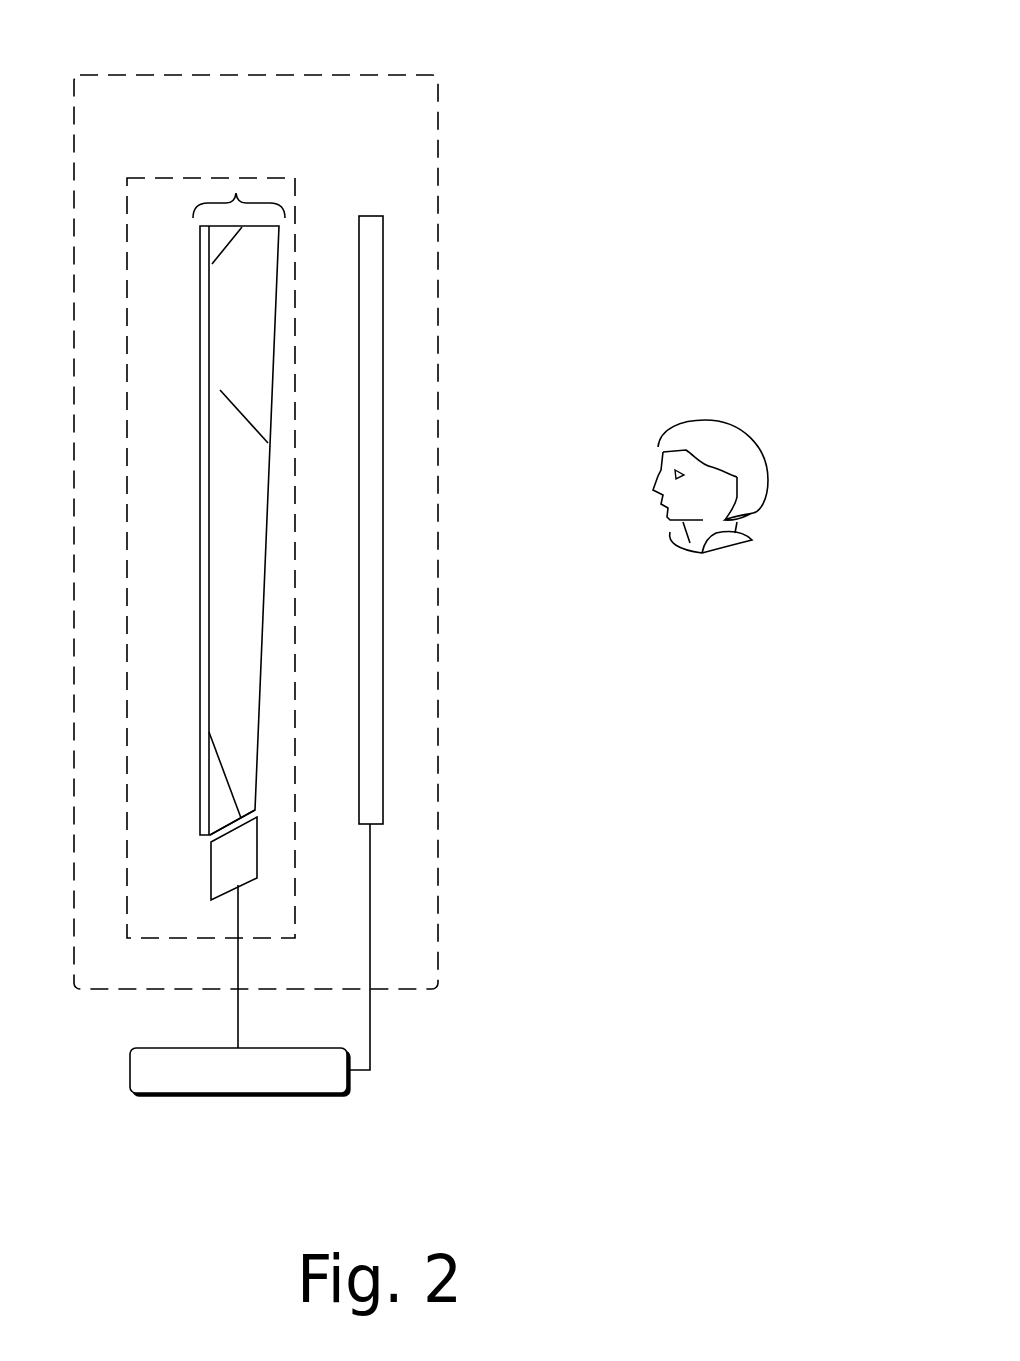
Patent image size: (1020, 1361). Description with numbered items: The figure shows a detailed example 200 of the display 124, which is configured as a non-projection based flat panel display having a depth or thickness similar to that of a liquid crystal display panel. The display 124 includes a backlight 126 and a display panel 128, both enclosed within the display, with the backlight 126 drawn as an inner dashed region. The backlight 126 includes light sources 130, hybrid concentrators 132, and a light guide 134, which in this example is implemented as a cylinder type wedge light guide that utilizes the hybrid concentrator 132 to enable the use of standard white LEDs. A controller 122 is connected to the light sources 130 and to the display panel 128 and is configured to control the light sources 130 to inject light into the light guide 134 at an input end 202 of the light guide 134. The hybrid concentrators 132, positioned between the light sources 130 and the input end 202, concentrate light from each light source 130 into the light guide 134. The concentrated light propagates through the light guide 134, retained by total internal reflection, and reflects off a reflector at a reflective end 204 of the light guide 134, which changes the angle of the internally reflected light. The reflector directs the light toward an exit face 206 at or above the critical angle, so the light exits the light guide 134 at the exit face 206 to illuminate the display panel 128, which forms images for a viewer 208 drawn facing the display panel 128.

The detailed example of display 200 is at (679, 50).
The controller 122 is at (240, 1072).
The display 124 is at (362, 75).
The backlight 126 is at (178, 177).
The display panel 128 is at (372, 215).
The light sources 130 is at (210, 873).
The hybrid concentrators 132 is at (235, 826).
The light guide 134 is at (236, 192).
The input end 202 is at (209, 732).
The reflective end 204 is at (212, 264).
The exit face 206 is at (220, 390).
The viewer 208 is at (727, 420).